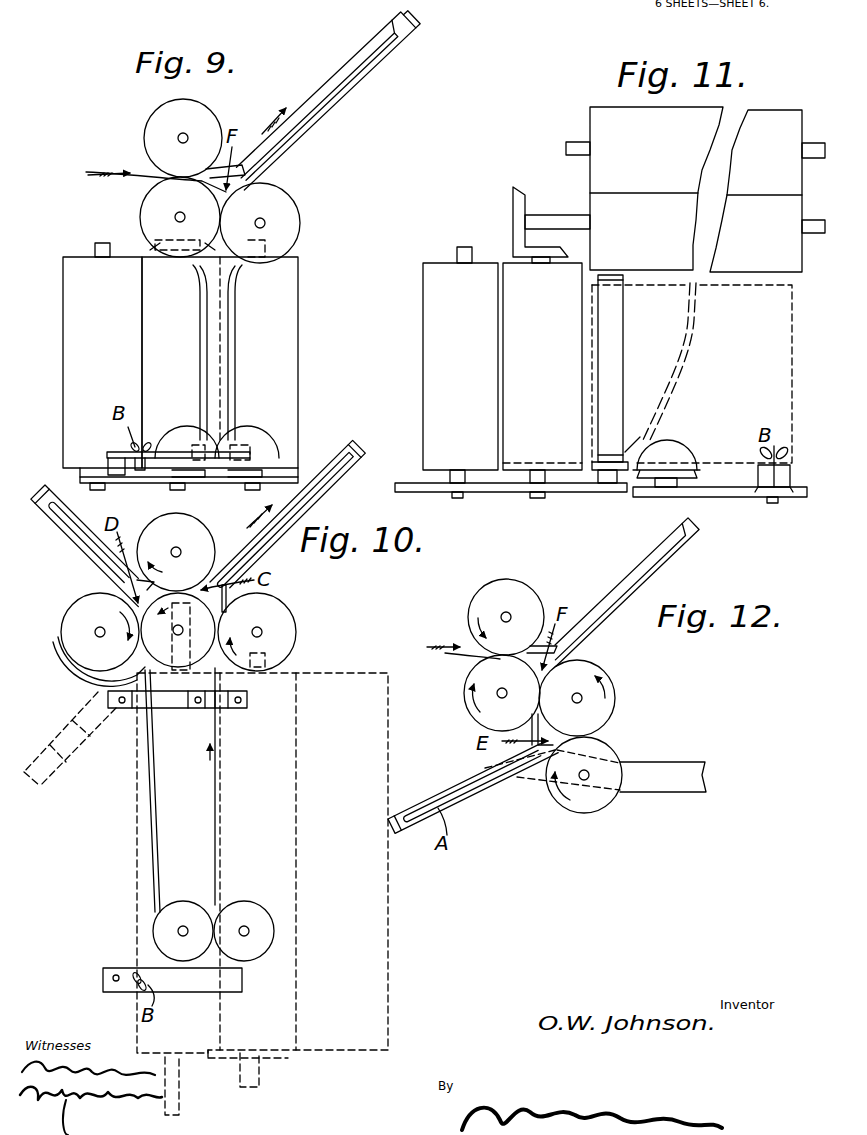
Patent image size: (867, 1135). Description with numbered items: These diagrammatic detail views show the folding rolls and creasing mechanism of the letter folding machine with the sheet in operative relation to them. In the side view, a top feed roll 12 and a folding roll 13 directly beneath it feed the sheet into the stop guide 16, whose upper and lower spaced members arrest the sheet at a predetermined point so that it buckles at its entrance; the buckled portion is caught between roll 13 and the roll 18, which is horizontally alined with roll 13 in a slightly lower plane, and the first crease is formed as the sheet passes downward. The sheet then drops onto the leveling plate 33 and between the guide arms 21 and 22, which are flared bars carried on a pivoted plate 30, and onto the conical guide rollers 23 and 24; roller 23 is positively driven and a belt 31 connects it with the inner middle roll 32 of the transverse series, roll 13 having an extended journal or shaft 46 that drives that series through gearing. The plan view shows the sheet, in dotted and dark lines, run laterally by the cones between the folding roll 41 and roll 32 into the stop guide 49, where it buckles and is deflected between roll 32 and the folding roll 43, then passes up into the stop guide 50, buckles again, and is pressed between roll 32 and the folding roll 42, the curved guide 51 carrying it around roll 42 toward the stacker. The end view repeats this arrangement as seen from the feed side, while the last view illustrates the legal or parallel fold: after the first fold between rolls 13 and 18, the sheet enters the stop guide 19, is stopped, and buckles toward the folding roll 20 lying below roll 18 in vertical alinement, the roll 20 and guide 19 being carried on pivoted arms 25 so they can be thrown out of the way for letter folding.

In FIG. 9, the top feed roll 12 is at (183, 138).
In FIG. 10, the top feed roll 12 is at (136, 868).
In FIG. 11, the top feed roll 12 is at (695, 189).
In FIG. 12, the top feed roll 12 is at (506, 617).
In FIG. 9, the folding roll 13 is at (180, 217).
In FIG. 11, the folding roll 13 is at (696, 207).
In FIG. 12, the folding roll 13 is at (502, 693).
In FIG. 12, the stop guide 16 is at (656, 559).
In FIG. 9, the roll 18 is at (260, 223).
In FIG. 10, the roll 18 is at (296, 910).
In FIG. 12, the roll 18 is at (577, 698).
In FIG. 12, the stop guide 19 is at (428, 810).
In FIG. 12, the folding roll 20 is at (584, 775).
In FIG. 9, the guide 21 is at (200, 337).
In FIG. 10, the guide 21 is at (214, 682).
In FIG. 11, the guide 21 is at (606, 332).
In FIG. 9, the guide 22 is at (237, 337).
In FIG. 10, the guide 22 is at (218, 722).
In FIG. 11, the guide 22 is at (627, 307).
In FIG. 9, the guide roller 23 is at (172, 442).
In FIG. 10, the guide roller 23 is at (183, 931).
In FIG. 11, the guide roller 23 is at (666, 463).
In FIG. 9, the guide roller 24 is at (247, 438).
In FIG. 10, the guide roller 24 is at (244, 931).
In FIG. 12, the arm 25 is at (673, 782).
In FIG. 9, the pivoted plate 30 is at (170, 449).
In FIG. 10, the pivoted plate 30 is at (135, 738).
In FIG. 11, the pivoted plate 30 is at (643, 433).
In FIG. 10, the belt 31 is at (96, 677).
In FIG. 9, the inner middle roll 32 is at (220, 362).
In FIG. 10, the inner middle roll 32 is at (178, 631).
In FIG. 10, the plate 33 is at (172, 981).
In FIG. 11, the plate 33 is at (786, 452).
In FIG. 9, the folding roll 41 is at (249, 348).
In FIG. 10, the folding roll 41 is at (257, 632).
In FIG. 9, the folding roll 42 is at (102, 362).
In FIG. 10, the folding roll 42 is at (100, 632).
In FIG. 11, the folding roll 42 is at (542, 366).
In FIG. 10, the folding roll 43 is at (176, 552).
In FIG. 11, the folding roll 43 is at (460, 366).
In FIG. 10, the shaft 46 is at (212, 1085).
In FIG. 10, the stop guide 49 is at (333, 472).
In FIG. 10, the stop guide 50 is at (92, 546).
In FIG. 10, the curved guide 51 is at (86, 674).